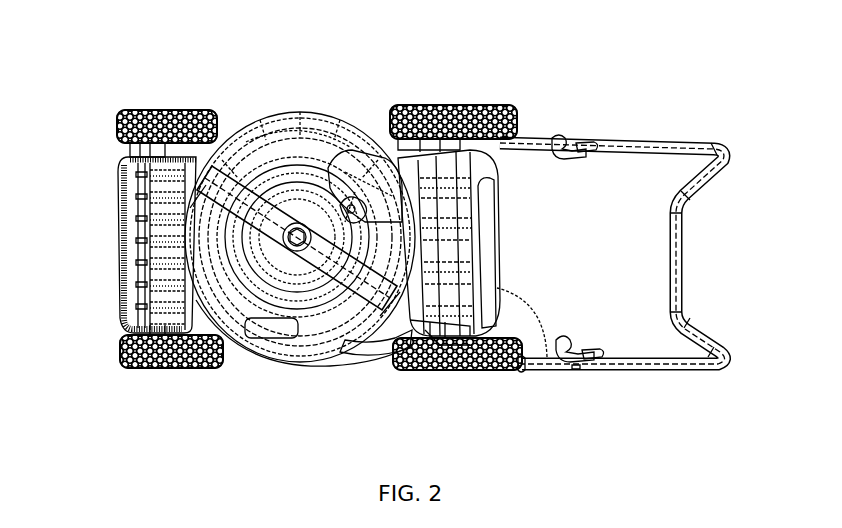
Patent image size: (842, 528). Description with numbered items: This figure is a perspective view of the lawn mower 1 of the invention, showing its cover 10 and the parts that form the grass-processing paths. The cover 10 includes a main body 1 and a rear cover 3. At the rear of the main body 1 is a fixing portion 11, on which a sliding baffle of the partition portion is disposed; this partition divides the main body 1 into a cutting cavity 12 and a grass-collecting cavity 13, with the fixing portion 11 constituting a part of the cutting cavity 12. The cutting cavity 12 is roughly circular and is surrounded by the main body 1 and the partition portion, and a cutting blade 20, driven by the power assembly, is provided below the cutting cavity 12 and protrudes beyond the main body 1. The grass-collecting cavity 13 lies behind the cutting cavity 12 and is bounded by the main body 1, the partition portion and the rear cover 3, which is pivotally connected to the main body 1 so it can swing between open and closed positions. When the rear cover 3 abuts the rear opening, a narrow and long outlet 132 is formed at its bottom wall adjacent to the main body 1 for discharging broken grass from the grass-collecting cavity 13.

The main body 1 is at (352, 168).
The cover 10 is at (243, 148).
The fixing portion 11 is at (357, 357).
The cutting cavity 12 is at (190, 370).
The grass-collecting cavity 13 is at (497, 267).
The outlet 132 is at (547, 357).
The cutting blade 20 is at (133, 222).
The rear cover 3 is at (493, 192).